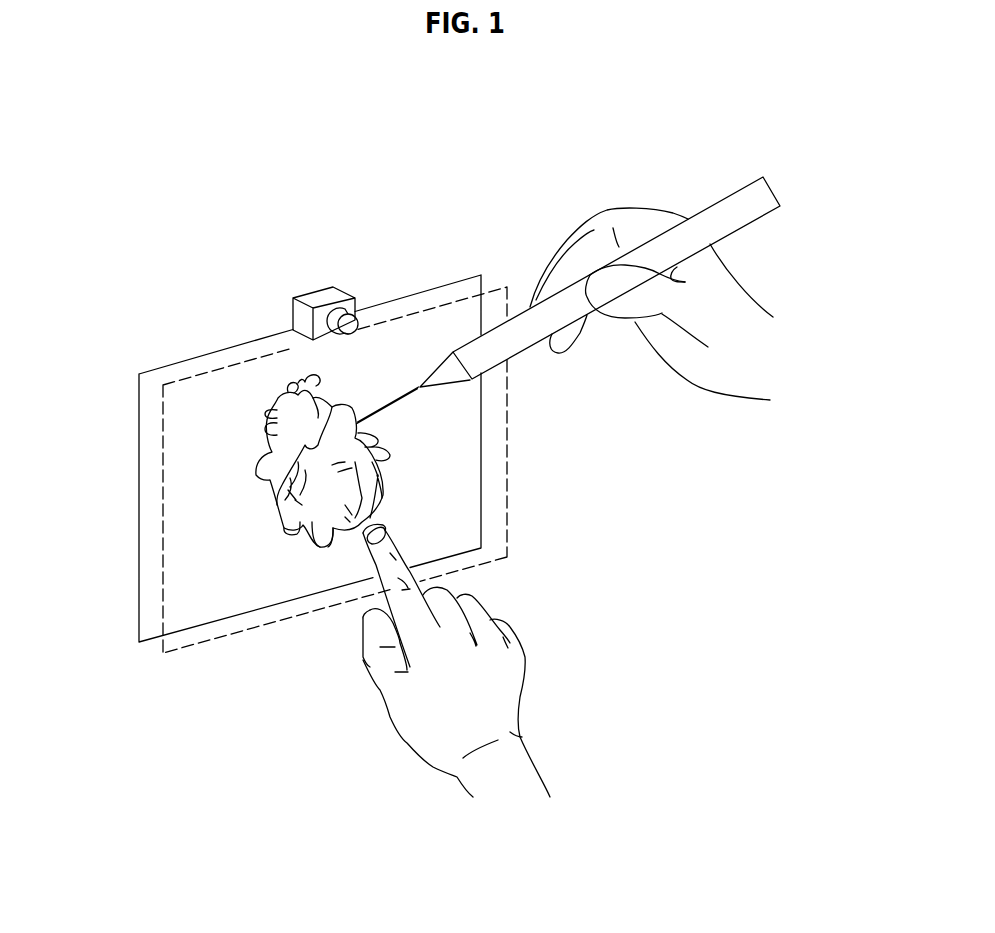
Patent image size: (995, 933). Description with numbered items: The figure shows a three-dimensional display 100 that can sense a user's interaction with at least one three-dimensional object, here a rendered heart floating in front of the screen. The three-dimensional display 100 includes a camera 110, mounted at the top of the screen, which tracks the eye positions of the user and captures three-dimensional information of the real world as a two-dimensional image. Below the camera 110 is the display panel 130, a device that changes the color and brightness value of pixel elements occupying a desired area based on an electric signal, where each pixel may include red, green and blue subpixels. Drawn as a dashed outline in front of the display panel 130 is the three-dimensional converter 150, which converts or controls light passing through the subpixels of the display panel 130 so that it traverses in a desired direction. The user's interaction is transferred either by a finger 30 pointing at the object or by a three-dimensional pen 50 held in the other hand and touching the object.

The 3D display 100 is at (471, 113).
The camera 110 is at (310, 294).
The display panel 130 is at (138, 447).
The 3D converter 150 is at (163, 518).
The 3D pen 50 is at (530, 309).
The finger 30 is at (522, 690).